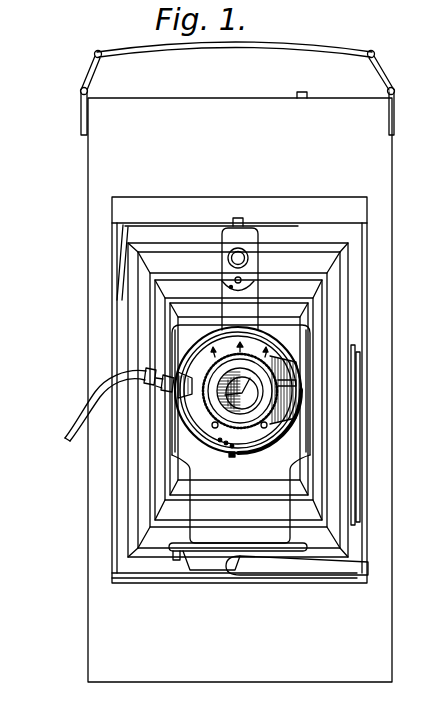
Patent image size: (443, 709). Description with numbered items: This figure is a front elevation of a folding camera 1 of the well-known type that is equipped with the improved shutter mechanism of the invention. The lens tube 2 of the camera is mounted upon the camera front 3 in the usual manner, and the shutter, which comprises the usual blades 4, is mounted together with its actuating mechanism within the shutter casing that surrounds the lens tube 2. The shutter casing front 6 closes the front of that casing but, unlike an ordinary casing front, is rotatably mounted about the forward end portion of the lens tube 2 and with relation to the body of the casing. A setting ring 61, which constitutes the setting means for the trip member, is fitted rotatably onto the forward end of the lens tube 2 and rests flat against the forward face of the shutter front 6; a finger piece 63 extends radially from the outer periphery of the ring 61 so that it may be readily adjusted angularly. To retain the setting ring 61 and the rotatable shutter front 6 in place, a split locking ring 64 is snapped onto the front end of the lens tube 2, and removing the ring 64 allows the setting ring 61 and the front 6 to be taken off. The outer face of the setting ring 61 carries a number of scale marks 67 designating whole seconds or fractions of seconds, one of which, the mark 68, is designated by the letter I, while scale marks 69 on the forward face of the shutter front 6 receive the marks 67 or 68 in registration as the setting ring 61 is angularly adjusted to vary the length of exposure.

The folding camera 1 is at (386, 526).
The lens tube 2 is at (228, 392).
The camera front 3 is at (233, 458).
The shutter blades 4 is at (220, 432).
The shutter casing front 6 is at (207, 338).
The setting ring 61 is at (262, 352).
The finger piece 63 is at (227, 343).
The split locking ring 64 is at (252, 432).
The scale marks 67 is at (196, 407).
The scale mark designated by letter I 68 is at (282, 383).
The scale marks 69 is at (288, 352).